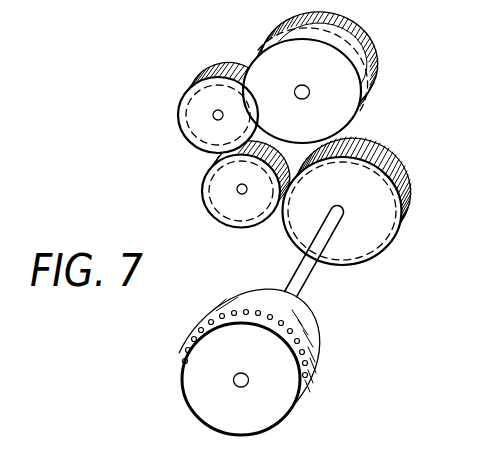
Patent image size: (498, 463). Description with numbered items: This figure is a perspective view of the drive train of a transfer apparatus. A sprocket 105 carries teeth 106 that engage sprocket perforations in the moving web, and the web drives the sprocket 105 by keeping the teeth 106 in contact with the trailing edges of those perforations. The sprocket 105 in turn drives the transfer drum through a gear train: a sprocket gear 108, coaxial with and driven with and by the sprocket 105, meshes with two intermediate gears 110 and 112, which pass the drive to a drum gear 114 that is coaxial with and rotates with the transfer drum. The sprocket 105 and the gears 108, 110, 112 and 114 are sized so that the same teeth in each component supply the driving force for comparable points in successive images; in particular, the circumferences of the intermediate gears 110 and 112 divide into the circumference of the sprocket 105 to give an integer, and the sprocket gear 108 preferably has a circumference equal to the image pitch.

The sprocket 105 is at (319, 350).
The teeth 106 is at (255, 322).
The sprocket gear 108 is at (411, 194).
The intermediate gear 110 is at (203, 181).
The intermediate gear 112 is at (213, 70).
The drum gear 114 is at (377, 61).